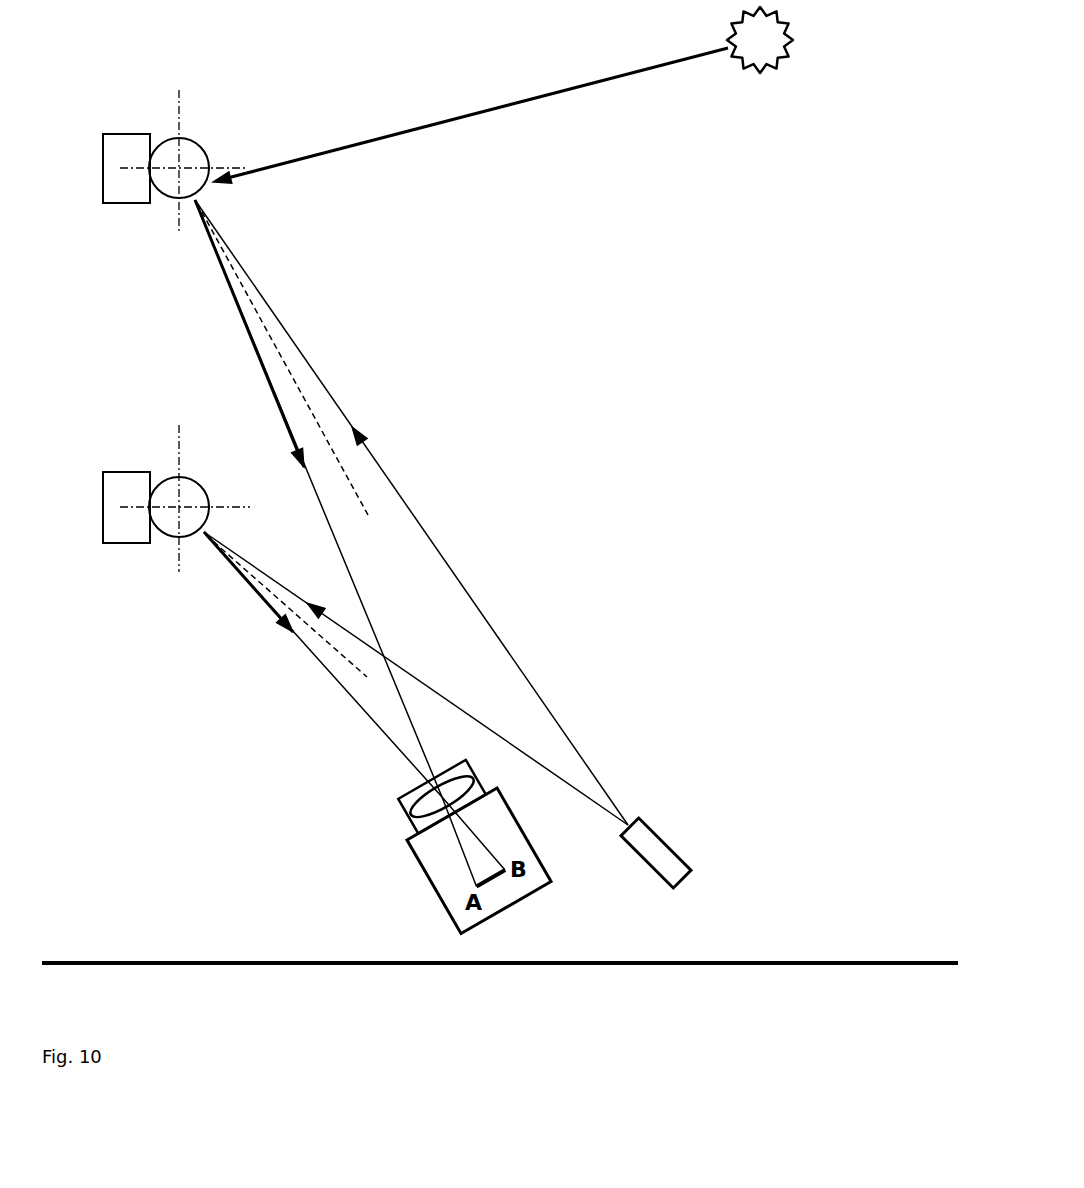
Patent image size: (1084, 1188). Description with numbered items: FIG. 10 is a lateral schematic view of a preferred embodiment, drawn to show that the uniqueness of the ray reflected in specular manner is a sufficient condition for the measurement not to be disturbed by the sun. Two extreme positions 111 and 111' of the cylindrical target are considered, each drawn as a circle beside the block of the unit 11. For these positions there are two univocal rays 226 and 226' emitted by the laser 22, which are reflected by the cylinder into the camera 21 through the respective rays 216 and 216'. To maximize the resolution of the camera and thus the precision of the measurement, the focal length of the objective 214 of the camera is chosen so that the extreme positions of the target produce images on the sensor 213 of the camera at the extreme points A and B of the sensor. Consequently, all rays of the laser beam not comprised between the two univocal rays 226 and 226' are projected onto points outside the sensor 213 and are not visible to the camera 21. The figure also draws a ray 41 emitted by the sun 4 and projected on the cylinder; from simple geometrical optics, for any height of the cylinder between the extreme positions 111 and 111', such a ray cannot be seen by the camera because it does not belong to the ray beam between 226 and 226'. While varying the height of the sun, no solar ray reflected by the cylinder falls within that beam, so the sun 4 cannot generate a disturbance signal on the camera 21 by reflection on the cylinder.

The light source unit 11 is at (118, 140).
The extreme position of the target 111 is at (190, 158).
The extreme position of the target 111' is at (184, 497).
The sun 4 is at (782, 68).
The ray emitted by the sun 41 is at (572, 92).
The ray reflected in the camera 216 is at (336, 543).
The ray reflected in the camera 216' is at (354, 701).
The univocal ray 226 is at (438, 512).
The univocal ray 226' is at (416, 678).
The laser 22 is at (665, 845).
The camera 21 is at (425, 850).
The objective 214 is at (400, 795).
The sensor 213 is at (493, 882).